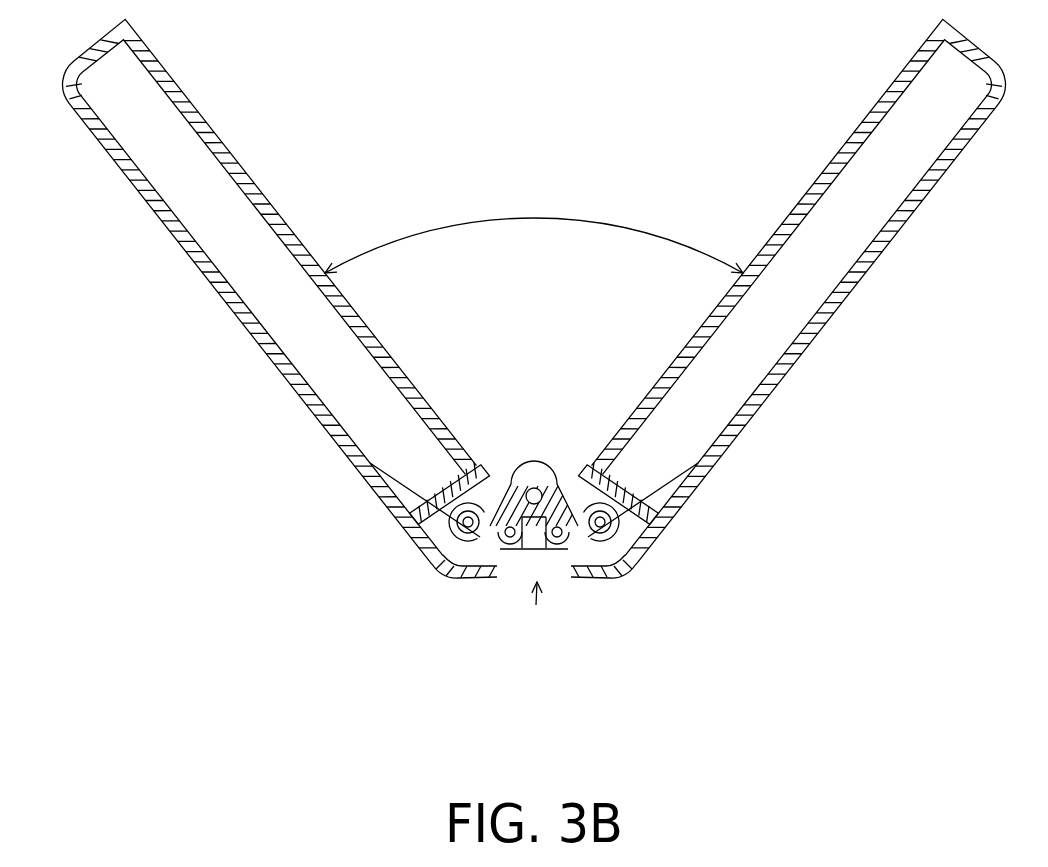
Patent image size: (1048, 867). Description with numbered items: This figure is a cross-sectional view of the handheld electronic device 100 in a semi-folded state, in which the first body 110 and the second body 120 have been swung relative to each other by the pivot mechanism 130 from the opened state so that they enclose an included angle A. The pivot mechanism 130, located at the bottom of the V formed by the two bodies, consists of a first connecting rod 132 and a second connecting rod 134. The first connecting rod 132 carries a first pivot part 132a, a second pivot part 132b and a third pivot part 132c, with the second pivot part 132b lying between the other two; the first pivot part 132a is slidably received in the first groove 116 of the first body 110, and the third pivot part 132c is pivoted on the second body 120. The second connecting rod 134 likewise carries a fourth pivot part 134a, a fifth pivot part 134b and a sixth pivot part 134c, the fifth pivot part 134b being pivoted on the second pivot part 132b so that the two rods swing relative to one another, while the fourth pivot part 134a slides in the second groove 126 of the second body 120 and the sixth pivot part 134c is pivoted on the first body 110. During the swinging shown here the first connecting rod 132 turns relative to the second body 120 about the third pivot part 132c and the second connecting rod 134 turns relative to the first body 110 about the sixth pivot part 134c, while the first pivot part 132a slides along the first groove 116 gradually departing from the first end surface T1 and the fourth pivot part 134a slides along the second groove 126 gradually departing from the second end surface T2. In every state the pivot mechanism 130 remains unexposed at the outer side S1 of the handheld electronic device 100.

The handheld electronic device 100 is at (534, 372).
The first body 110 is at (790, 300).
The first groove 116 is at (618, 538).
The second body 120 is at (279, 300).
The second groove 126 is at (450, 538).
The pivot mechanism 130 is at (534, 452).
The first connecting rod 132 is at (687, 519).
The first pivot part 132a is at (633, 520).
The second pivot part 132b is at (546, 490).
The third pivot part 132c is at (510, 545).
The second connecting rod 134 is at (382, 487).
The fourth pivot part 134a is at (437, 520).
The fifth pivot part 134b is at (535, 478).
The sixth pivot part 134c is at (557, 545).
The included angle A is at (548, 218).
The outer side S1 is at (537, 608).
The first end surface T1 is at (568, 483).
The second end surface T2 is at (501, 483).